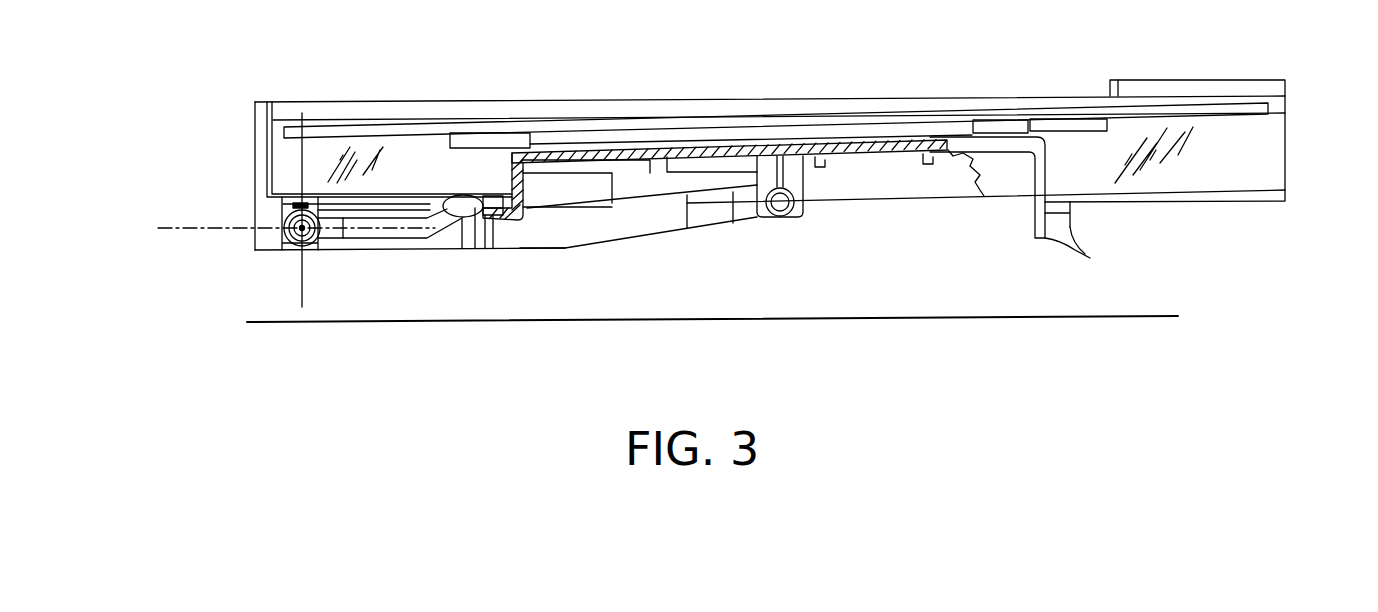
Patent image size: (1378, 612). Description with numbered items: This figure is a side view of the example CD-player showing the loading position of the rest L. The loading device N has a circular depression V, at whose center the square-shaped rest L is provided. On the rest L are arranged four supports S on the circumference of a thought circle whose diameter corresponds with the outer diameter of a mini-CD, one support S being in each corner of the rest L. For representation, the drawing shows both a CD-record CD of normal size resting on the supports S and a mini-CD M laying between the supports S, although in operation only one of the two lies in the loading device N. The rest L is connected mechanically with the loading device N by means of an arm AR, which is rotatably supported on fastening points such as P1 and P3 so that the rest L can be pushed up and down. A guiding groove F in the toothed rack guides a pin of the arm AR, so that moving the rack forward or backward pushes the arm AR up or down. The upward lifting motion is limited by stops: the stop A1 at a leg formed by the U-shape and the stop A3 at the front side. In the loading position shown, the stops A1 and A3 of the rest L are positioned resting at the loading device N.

The circular depression V is at (275, 125).
The loading device N is at (1288, 148).
The CD-record CD is at (866, 117).
The supports S is at (547, 132).
The mini-CD M is at (727, 133).
The arm AR is at (543, 248).
The fastening point P1 is at (788, 218).
The fastening point P3 is at (283, 227).
The guiding groove F is at (365, 240).
The stop A3 is at (506, 225).
The rest L is at (945, 142).
The stop A1 is at (1080, 252).